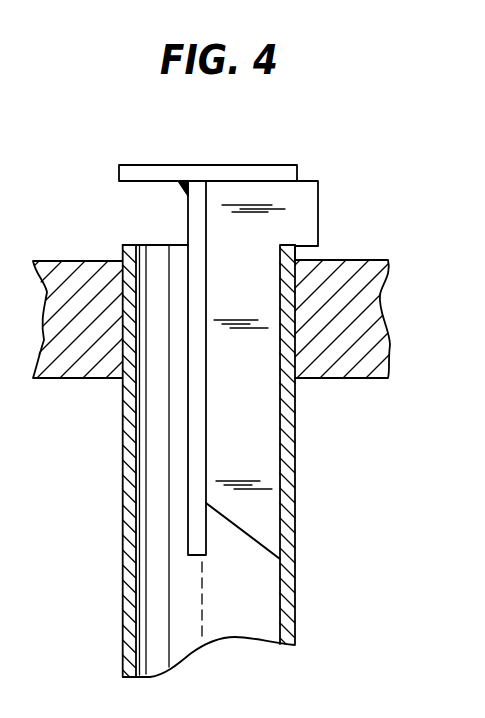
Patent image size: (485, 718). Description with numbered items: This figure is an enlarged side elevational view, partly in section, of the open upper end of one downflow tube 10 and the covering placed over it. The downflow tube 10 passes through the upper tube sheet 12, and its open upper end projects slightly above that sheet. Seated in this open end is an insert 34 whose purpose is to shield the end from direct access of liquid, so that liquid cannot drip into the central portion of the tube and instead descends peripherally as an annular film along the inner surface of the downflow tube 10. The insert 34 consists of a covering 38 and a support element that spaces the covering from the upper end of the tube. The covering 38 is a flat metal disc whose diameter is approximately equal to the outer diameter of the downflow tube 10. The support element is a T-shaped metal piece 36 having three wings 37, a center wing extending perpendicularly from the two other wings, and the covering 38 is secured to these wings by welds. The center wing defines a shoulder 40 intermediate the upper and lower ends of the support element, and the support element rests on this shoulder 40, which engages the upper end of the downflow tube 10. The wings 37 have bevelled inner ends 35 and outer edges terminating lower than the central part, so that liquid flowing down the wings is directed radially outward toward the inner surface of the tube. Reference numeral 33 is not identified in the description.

The downflow tube 10 is at (288, 600).
The upper tube sheet 12 is at (343, 362).
The stem 33 is at (185, 188).
The insert 34 is at (245, 334).
The bevelled inner ends 35 is at (230, 523).
The T-shaped metal piece 36 is at (263, 460).
The wings 37 is at (305, 220).
The covering 38 is at (264, 172).
The shoulder 40 is at (308, 251).